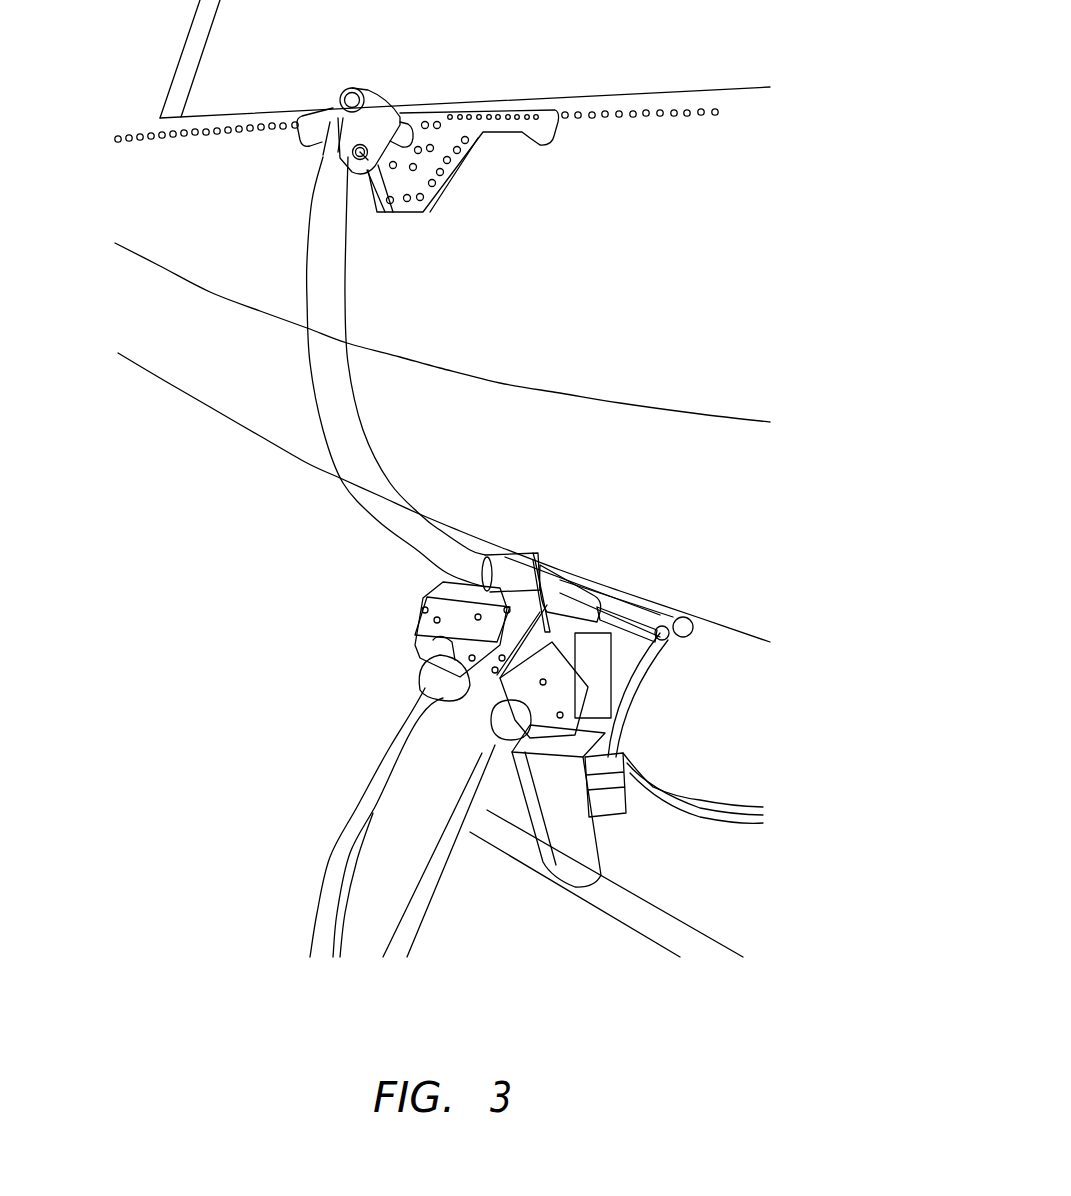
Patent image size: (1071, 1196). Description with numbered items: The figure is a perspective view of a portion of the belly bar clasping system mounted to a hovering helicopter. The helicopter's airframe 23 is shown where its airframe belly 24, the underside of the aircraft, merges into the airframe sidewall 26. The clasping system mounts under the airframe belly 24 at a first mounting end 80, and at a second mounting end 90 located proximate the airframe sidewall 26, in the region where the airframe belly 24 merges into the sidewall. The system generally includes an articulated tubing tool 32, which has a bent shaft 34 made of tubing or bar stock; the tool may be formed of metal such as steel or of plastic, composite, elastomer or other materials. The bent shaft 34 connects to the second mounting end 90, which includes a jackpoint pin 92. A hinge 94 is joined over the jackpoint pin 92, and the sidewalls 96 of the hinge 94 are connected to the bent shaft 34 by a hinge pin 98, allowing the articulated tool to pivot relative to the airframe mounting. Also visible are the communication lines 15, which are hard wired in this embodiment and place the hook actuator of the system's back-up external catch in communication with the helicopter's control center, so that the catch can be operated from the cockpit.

The communication lines 15 is at (673, 787).
The airframe 23 is at (638, 375).
The airframe belly 24 is at (471, 480).
The airframe sidewall 26 is at (608, 180).
The articulated tubing tool 32 is at (372, 630).
The bent shaft 34 is at (310, 240).
The first mounting end 80 is at (660, 620).
The second mounting end 90 is at (442, 205).
The jackpoint pin 92 is at (398, 130).
The hinge 94 is at (388, 100).
The sidewalls 96 is at (373, 163).
The hinge pin 98 is at (370, 180).